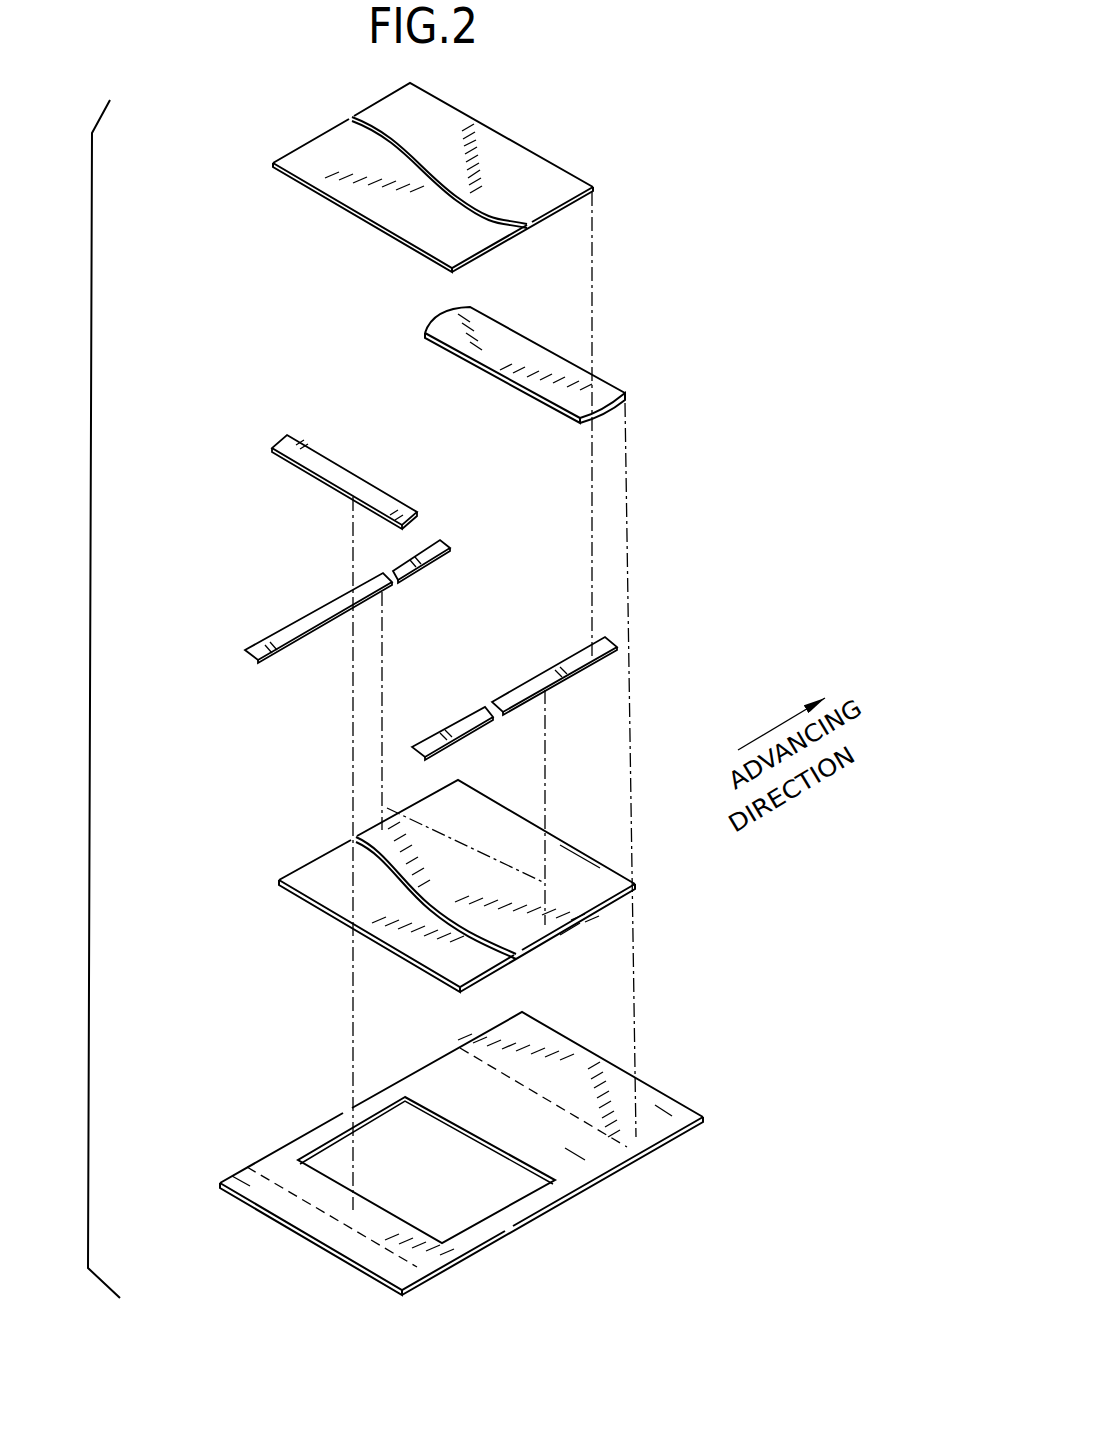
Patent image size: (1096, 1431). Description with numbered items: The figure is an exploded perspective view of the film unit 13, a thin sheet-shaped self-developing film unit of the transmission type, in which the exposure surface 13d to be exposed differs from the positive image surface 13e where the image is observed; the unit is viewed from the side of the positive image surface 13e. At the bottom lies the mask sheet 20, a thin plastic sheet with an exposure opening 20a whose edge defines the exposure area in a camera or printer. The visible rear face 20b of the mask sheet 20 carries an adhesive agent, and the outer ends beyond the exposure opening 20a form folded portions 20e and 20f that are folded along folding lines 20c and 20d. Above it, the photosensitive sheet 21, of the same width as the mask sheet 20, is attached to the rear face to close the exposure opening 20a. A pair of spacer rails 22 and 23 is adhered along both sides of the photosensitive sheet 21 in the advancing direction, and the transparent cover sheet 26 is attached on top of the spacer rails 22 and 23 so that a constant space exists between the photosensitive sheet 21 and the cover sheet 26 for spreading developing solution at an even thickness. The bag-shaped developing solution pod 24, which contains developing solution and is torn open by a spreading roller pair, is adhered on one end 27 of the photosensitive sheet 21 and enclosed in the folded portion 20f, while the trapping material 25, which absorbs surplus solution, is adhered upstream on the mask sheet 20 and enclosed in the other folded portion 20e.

The film unit 13 is at (90, 737).
The exposure surface 13d is at (572, 930).
The positive image surface 13e is at (448, 855).
The mask sheet 20 is at (458, 1134).
The exposure opening 20a is at (460, 1130).
The rear face 20b is at (570, 1143).
The folding line 20c is at (307, 1203).
The folding line 20d is at (533, 1097).
The folded portion 20e is at (228, 1172).
The folded portion 20f is at (663, 1113).
The photosensitive sheet 21 is at (454, 867).
The spacer rail 22 is at (310, 610).
The spacer rail 23 is at (535, 680).
The developing solution pod 24 is at (620, 385).
The trapping material 25 is at (283, 443).
The cover sheet 26 is at (297, 160).
The one end 27 is at (557, 865).